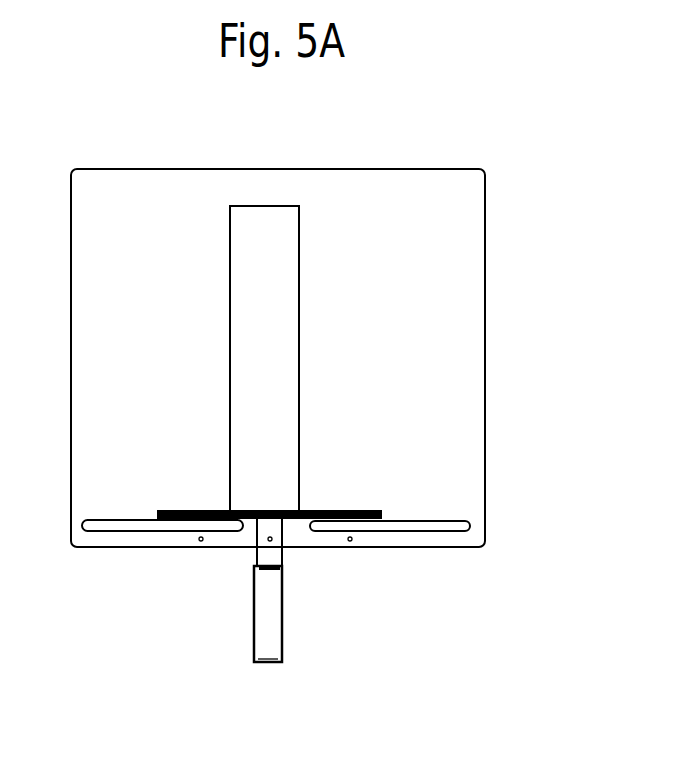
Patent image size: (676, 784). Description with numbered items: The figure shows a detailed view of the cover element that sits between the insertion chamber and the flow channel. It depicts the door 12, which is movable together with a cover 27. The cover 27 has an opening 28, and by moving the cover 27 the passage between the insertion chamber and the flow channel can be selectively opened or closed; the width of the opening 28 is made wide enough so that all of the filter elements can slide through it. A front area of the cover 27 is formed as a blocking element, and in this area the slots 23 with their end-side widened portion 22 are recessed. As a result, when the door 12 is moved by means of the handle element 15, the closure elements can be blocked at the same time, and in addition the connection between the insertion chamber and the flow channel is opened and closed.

The door 12 is at (382, 516).
The handle element 15 is at (265, 640).
The end-side widened portion 22 is at (233, 530).
The slots 23 is at (127, 518).
The cover 27 is at (402, 287).
The opening 28 is at (273, 273).